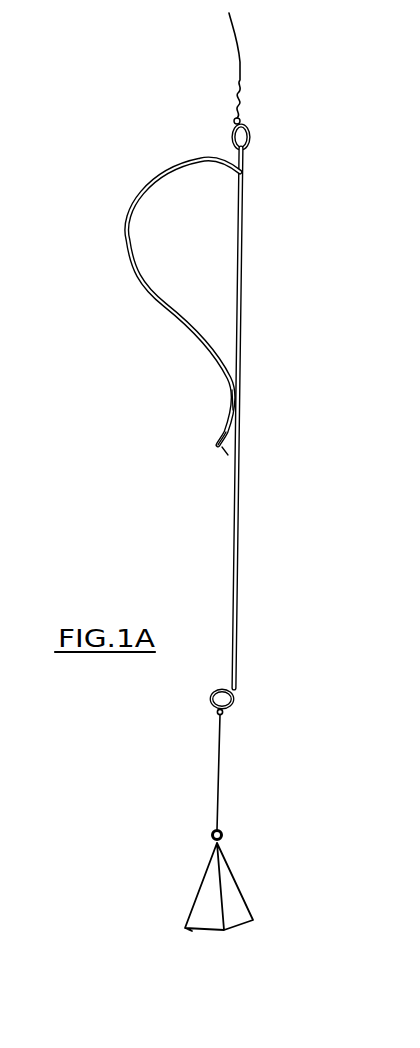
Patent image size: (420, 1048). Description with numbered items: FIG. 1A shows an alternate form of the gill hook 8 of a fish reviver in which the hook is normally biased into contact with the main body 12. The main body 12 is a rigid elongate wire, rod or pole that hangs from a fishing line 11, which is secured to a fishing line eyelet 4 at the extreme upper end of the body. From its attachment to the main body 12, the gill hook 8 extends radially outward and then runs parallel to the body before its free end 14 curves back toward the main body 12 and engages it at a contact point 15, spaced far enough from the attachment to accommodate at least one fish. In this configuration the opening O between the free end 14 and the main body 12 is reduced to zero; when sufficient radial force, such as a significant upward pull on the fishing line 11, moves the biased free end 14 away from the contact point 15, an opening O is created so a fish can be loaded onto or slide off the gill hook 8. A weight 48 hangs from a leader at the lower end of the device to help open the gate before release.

The fishing line 11 is at (240, 63).
The fishing line eyelet 4 is at (249, 138).
The gill hook 8 is at (140, 199).
The free end 14 is at (221, 437).
The contact point 15 is at (240, 403).
The main body 12 is at (238, 497).
The opening O is at (221, 456).
The weight 48 is at (232, 903).